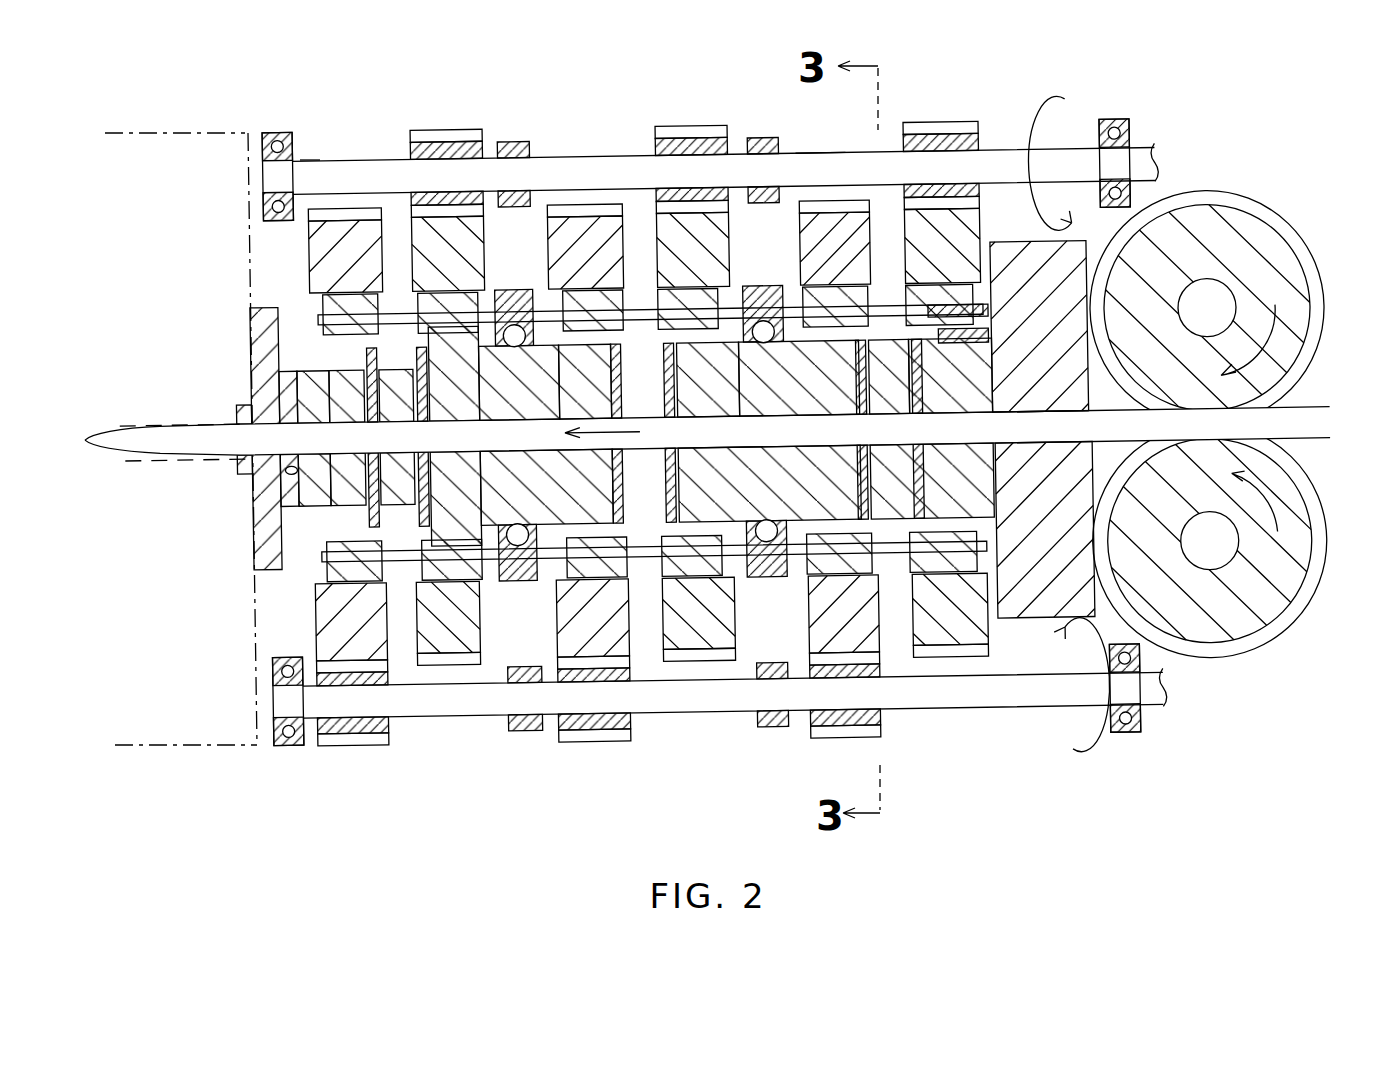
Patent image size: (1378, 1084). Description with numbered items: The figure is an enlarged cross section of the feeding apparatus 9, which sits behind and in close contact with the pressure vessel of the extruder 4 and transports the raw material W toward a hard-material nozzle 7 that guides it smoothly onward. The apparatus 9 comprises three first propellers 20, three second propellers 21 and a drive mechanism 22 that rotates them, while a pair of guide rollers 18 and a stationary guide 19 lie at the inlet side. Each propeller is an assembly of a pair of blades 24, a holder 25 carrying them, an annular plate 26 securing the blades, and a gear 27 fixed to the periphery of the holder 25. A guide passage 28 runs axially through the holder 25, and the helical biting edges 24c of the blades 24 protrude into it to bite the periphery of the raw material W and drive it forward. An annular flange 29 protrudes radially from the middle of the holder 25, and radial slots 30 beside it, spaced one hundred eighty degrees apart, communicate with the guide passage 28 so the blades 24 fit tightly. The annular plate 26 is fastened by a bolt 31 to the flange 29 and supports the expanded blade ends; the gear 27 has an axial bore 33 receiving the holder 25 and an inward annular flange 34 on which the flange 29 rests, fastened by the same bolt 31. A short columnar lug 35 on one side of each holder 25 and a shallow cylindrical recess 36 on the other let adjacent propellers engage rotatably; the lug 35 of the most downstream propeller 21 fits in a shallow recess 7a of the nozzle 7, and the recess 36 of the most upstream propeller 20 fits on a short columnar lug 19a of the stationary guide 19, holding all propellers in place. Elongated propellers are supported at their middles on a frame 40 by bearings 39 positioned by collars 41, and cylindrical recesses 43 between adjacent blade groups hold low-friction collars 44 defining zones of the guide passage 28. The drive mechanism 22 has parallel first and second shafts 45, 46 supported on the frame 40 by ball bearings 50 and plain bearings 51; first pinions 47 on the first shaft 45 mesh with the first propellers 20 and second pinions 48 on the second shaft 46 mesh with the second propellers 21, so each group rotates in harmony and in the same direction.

The extruder 4 is at (150, 130).
The nozzle 7 is at (258, 350).
The shallow recess 7a is at (290, 472).
The apparatus 9 is at (362, 110).
The guide rollers 18 is at (1237, 625).
The stationary guide 19 is at (1032, 600).
The short columnar lug 19a is at (1045, 455).
The first propellers 20 is at (455, 225).
The second propellers 21 is at (356, 640).
The drive mechanism 22 is at (1006, 148).
The blades 24 is at (828, 410).
The helical biting edge 24c is at (1045, 530).
The holder 25 is at (955, 357).
The annular plate 26 is at (945, 512).
The gear 27 is at (965, 645).
The guide passage 28 is at (637, 390).
The annular flange 29 is at (948, 283).
The slots 30 is at (988, 397).
The bolt 31 is at (908, 296).
The axial bore 33 is at (942, 298).
The annular flange 34 is at (968, 337).
The short columnar lug 35 is at (296, 405).
The shallow cylindrical recess 36 is at (908, 350).
The bearings 39 is at (515, 328).
The frame 40 is at (515, 565).
The collars 41 is at (862, 525).
The cylindrical recesses 43 is at (510, 420).
The collars 44 is at (585, 420).
The first shaft 45 is at (822, 162).
The second shaft 46 is at (692, 700).
The first pinions 47 is at (472, 150).
The second pinions 48 is at (393, 724).
The ball bearings 50 is at (281, 140).
The plain bearings 51 is at (522, 148).
The raw material W is at (1323, 390).